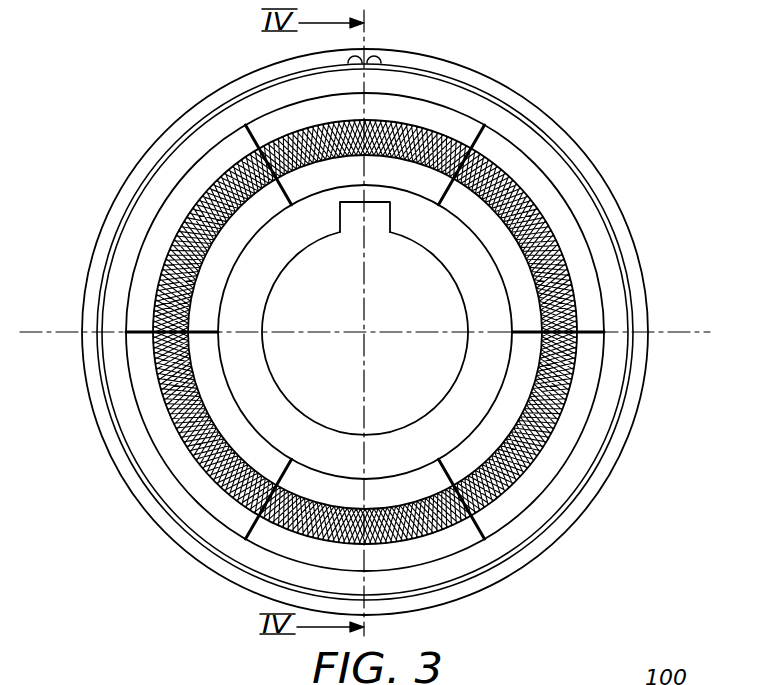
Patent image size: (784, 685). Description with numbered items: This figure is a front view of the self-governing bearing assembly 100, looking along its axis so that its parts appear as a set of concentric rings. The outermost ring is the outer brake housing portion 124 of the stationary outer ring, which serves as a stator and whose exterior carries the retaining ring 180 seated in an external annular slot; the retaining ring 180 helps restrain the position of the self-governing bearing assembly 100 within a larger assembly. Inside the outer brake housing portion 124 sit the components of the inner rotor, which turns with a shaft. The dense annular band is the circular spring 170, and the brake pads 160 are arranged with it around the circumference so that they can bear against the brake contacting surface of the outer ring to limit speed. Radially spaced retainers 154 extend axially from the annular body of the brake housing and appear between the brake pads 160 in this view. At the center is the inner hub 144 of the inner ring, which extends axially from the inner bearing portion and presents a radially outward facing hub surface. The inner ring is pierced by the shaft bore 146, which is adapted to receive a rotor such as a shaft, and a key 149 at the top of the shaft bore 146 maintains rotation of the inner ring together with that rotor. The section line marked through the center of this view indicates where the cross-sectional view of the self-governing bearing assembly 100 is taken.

The self-governing bearing assembly 100 is at (645, 93).
The outer brake housing portion 124 is at (177, 162).
The inner hub 144 is at (258, 398).
The shaft bore 146 is at (443, 305).
The key 149 is at (377, 213).
The retainers 154 is at (162, 233).
The brake pads 160 is at (300, 117).
The circular spring 170 is at (160, 283).
The retaining ring 180 is at (197, 110).